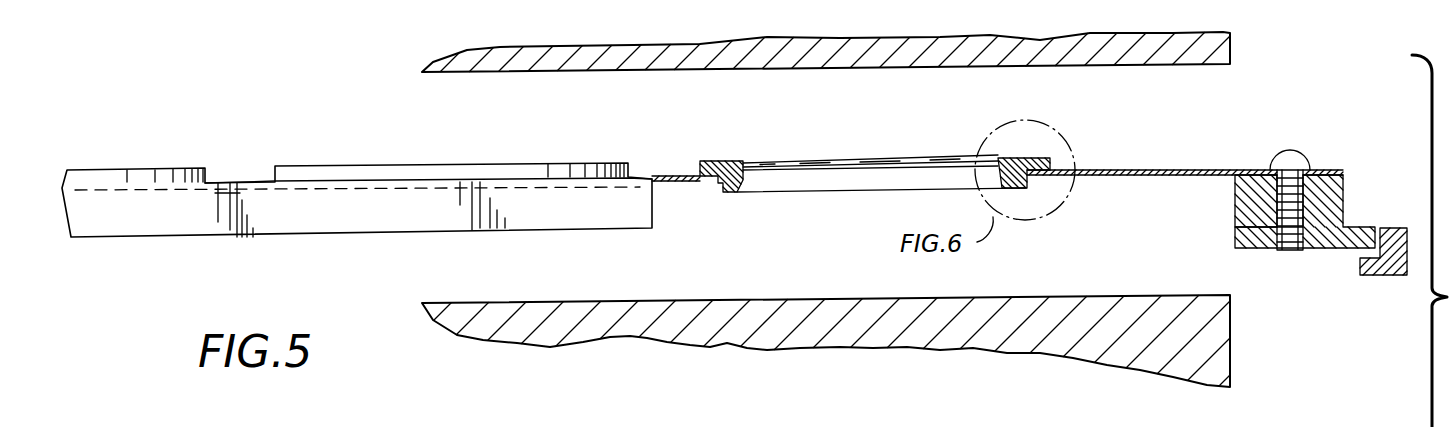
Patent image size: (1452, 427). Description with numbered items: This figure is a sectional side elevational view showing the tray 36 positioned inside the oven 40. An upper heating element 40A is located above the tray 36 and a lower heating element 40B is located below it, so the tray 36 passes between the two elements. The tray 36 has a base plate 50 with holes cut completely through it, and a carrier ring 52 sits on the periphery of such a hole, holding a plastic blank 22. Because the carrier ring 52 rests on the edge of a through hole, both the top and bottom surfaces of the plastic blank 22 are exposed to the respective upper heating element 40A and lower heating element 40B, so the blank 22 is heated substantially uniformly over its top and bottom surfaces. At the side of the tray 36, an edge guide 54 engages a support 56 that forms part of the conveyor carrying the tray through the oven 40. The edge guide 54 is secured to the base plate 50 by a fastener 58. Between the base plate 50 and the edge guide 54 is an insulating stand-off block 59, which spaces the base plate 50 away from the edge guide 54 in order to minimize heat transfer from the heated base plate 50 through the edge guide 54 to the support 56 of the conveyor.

The plastic blank 22 is at (850, 161).
The tray 36 is at (428, 213).
The oven 40 is at (1243, 352).
The upper heating element 40A is at (572, 71).
The lower heating element 40B is at (722, 262).
The base plate 50 is at (1140, 170).
The carrier ring 52 is at (724, 160).
The edge guide 54 is at (1360, 227).
The support 56 is at (1376, 277).
The fastener 58 is at (1290, 158).
The insulating stand-off block 59 is at (1237, 207).